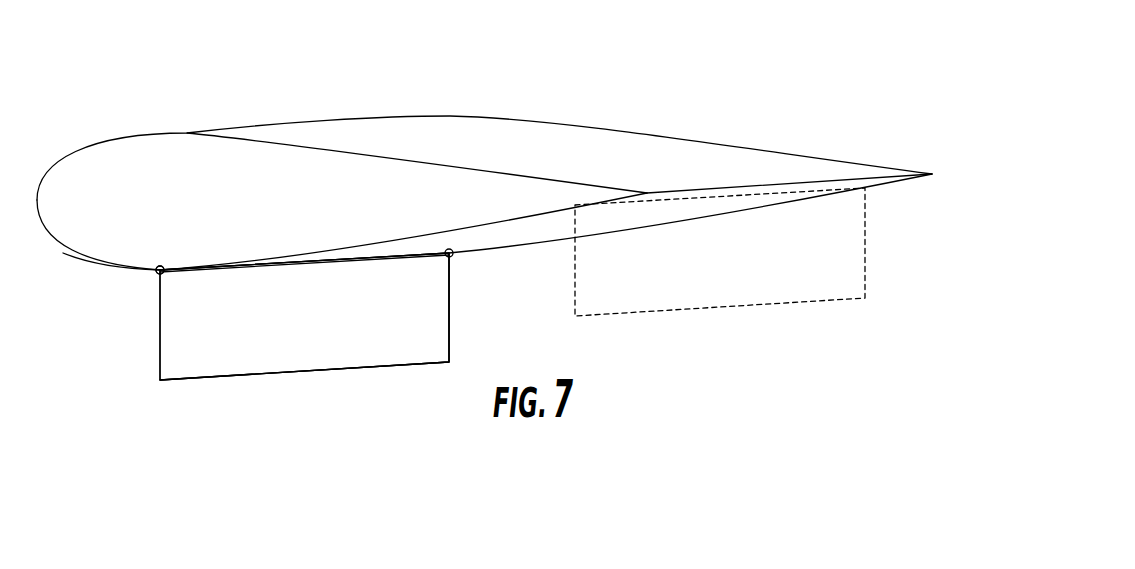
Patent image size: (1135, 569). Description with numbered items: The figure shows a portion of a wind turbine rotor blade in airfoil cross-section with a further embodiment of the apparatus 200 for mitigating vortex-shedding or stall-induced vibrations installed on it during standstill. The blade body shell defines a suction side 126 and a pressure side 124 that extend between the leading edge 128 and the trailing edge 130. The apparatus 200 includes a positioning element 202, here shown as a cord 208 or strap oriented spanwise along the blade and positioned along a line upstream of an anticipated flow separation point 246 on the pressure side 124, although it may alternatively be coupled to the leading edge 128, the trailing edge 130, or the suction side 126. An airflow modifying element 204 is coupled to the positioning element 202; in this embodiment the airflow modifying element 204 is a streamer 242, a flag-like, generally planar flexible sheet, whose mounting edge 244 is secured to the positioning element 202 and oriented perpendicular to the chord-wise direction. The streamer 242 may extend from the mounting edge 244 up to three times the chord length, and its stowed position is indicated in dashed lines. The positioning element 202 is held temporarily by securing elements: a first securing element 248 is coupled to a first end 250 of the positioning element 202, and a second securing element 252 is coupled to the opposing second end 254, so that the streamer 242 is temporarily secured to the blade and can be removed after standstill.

The apparatus 200 is at (802, 94).
The suction side 126 is at (510, 130).
The leading edge 128 is at (55, 254).
The pressure side 124 is at (528, 245).
The trailing edge 130 is at (894, 186).
The positioning element 202 is at (330, 263).
The cord 208 is at (304, 316).
The mounting edge 244 is at (238, 268).
The airflow modifying element 204 is at (850, 285).
The streamer 242 is at (304, 316).
The flow separation point 246 is at (154, 279).
The first securing element 248 is at (157, 266).
The first end 250 is at (177, 248).
The second securing element 252 is at (455, 258).
The second end 254 is at (404, 236).